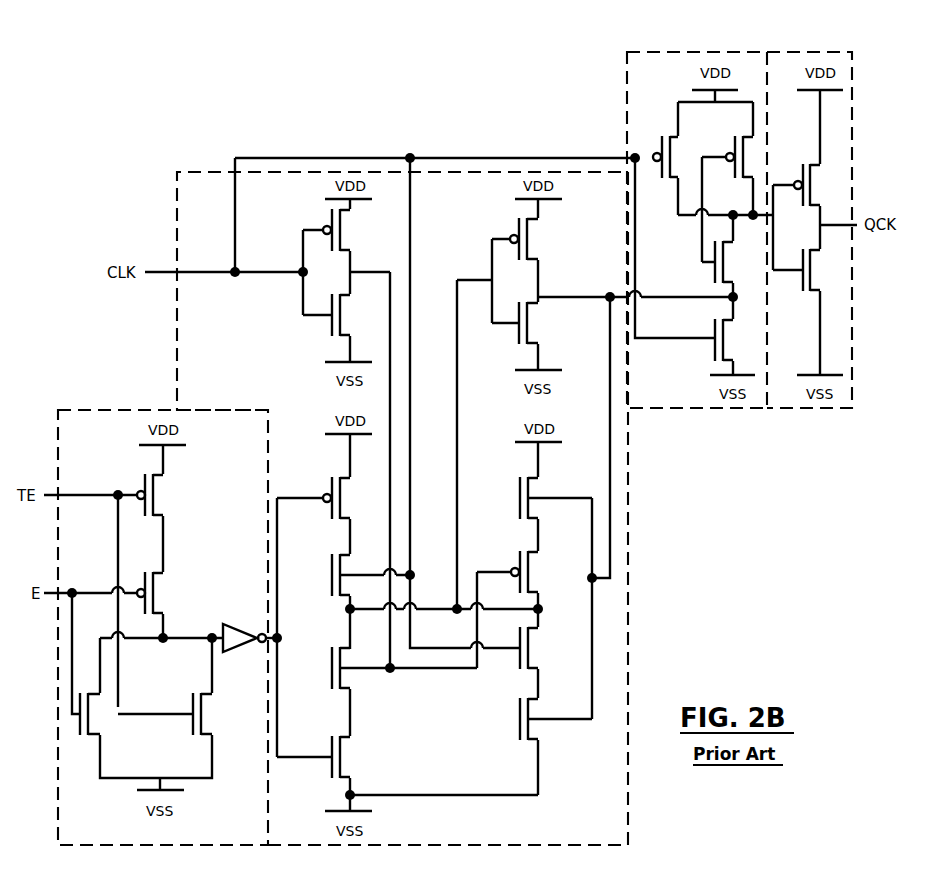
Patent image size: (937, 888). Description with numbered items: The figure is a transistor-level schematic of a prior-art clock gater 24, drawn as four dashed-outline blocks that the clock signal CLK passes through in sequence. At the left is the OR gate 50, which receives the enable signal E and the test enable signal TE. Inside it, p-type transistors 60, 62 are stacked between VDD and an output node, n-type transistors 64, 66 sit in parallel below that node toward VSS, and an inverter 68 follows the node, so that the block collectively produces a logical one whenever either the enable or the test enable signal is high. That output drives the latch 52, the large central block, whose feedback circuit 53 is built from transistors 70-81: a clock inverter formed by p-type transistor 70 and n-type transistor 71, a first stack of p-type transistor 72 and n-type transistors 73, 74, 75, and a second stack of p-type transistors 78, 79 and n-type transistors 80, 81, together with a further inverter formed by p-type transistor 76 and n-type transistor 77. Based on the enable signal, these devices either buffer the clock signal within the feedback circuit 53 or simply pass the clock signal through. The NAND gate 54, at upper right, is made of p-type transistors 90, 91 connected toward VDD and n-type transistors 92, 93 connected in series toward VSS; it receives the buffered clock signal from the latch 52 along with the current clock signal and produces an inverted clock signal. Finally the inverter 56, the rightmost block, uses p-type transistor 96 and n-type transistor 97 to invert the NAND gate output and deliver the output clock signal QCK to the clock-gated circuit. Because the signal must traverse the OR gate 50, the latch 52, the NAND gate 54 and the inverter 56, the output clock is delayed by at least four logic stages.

The clock gater 24 is at (597, 42).
The OR gate 50 is at (140, 410).
The latch 52 is at (630, 472).
The feedback circuit 53 is at (556, 780).
The NAND gate 54 is at (748, 52).
The inverter 56 is at (803, 52).
The p-type transistor 60 is at (162, 488).
The p-type transistor 62 is at (162, 586).
The n-type transistor 64 is at (97, 721).
The n-type transistor 66 is at (212, 721).
The inverter 68 is at (234, 624).
The p-type transistor 70 is at (332, 222).
The n-type transistor 71 is at (332, 345).
The p-type transistor 72 is at (332, 482).
The n-type transistor 73 is at (332, 574).
The n-type transistor 74 is at (332, 669).
The n-type transistor 75 is at (332, 742).
The p-type transistor 76 is at (519, 232).
The n-type transistor 77 is at (519, 345).
The p-type transistor 78 is at (520, 506).
The p-type transistor 79 is at (531, 560).
The n-type transistor 80 is at (534, 648).
The n-type transistor 81 is at (520, 718).
The p-type transistor 90 is at (670, 136).
The p-type transistor 91 is at (743, 136).
The n-type transistor 92 is at (715, 281).
The n-type transistor 93 is at (715, 363).
The p-type transistor 96 is at (811, 164).
The n-type transistor 97 is at (810, 295).